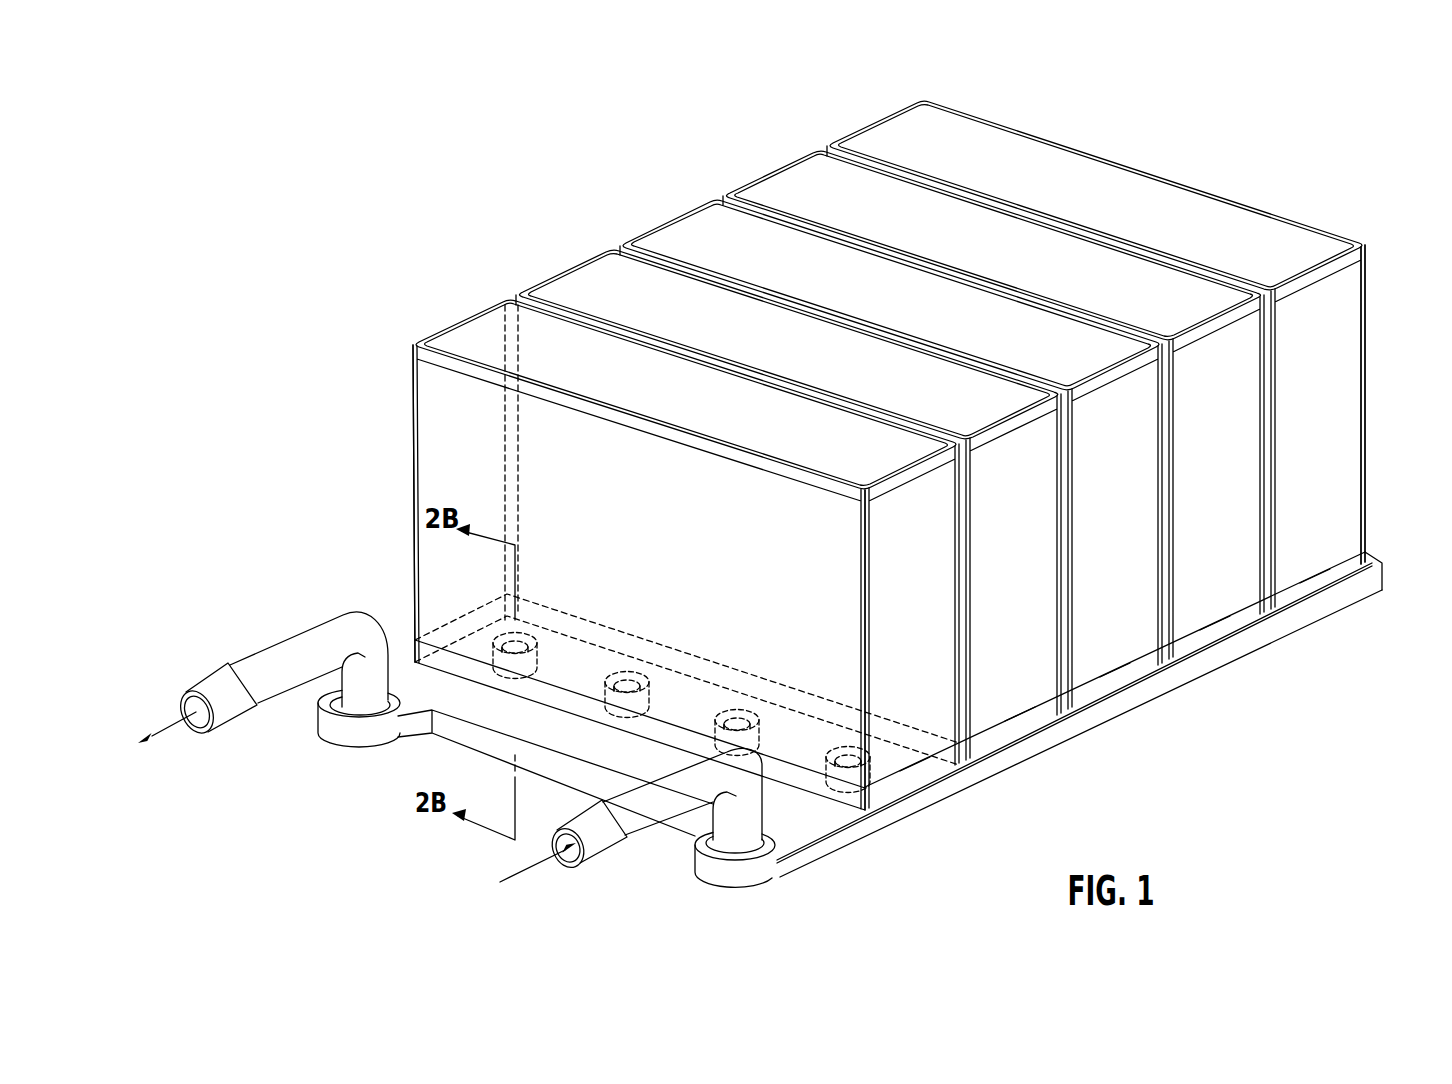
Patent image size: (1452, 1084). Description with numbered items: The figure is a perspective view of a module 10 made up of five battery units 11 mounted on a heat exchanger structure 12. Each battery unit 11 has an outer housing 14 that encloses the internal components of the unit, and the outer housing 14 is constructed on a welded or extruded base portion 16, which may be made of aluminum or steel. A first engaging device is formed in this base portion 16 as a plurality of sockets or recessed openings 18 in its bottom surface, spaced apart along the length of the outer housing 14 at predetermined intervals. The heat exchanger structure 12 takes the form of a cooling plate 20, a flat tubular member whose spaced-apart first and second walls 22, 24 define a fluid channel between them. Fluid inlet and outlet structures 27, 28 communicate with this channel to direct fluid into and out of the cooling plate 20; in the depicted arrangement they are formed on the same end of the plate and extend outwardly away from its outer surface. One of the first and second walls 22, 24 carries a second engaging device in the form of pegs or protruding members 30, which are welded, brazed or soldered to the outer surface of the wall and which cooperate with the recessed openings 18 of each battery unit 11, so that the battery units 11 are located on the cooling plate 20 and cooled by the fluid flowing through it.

The module 10 is at (1272, 146).
The battery unit 11 is at (876, 122).
The heat exchanger structure 12 is at (1320, 667).
The outer housing 14 is at (412, 418).
The base portion 16 is at (1315, 585).
The recessed openings 18 is at (530, 634).
The cooling plate 20 is at (1385, 575).
The first wall 22 is at (1372, 558).
The second wall 24 is at (813, 858).
The fluid inlet structure 27 is at (643, 834).
The fluid outlet structure 28 is at (263, 704).
The protruding members 30 is at (537, 650).